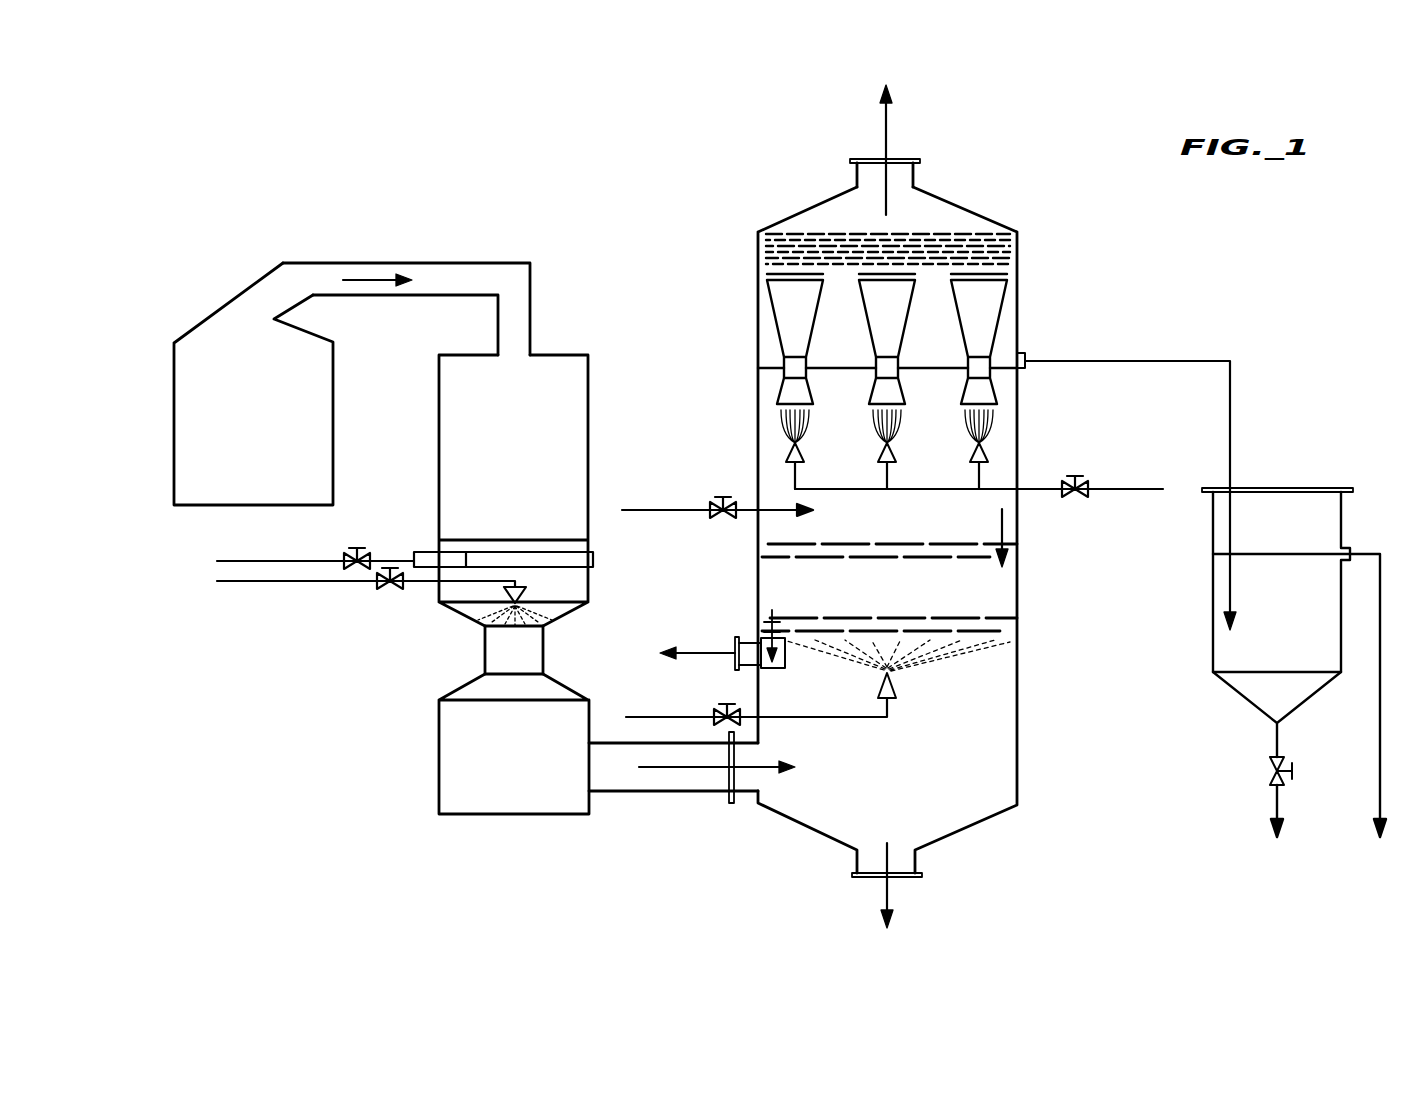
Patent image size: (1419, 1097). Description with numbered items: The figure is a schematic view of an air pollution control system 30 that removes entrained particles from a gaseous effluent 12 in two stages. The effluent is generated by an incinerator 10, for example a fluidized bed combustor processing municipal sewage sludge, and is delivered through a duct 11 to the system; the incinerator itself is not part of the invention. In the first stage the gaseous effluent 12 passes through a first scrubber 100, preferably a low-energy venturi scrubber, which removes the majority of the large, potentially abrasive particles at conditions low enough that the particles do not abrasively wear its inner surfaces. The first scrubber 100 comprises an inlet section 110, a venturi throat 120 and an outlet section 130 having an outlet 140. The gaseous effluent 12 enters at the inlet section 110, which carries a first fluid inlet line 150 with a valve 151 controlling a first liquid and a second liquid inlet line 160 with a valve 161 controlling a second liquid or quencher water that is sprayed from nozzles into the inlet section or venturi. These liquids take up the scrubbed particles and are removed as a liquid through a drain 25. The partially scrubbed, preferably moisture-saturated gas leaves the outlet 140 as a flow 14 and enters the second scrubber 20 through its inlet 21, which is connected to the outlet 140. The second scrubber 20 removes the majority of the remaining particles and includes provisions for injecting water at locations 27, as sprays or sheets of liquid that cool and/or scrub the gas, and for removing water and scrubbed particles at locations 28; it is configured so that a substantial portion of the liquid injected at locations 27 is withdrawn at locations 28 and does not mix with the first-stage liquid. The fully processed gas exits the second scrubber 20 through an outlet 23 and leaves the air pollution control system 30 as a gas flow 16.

The incinerator 10 is at (226, 505).
The duct 11 is at (461, 263).
The gaseous effluent 12 is at (374, 278).
The flow 14 is at (692, 791).
The gas flow 16 is at (886, 137).
The second scrubber 20 is at (800, 830).
The inlet 21 is at (758, 797).
The outlet 23 is at (913, 178).
The drain 25 is at (887, 884).
The locations 27 is at (633, 510).
The locations 28 is at (688, 653).
The air pollution control system 30 is at (637, 193).
The first scrubber 100 is at (455, 832).
The inlet section 110 is at (590, 582).
The venturi throat 120 is at (485, 640).
The outlet section 130 is at (439, 757).
The outlet 140 is at (647, 791).
The first fluid inlet line 150 is at (232, 561).
The valve 151 is at (350, 552).
The second liquid inlet line 160 is at (238, 583).
The valve 161 is at (386, 592).